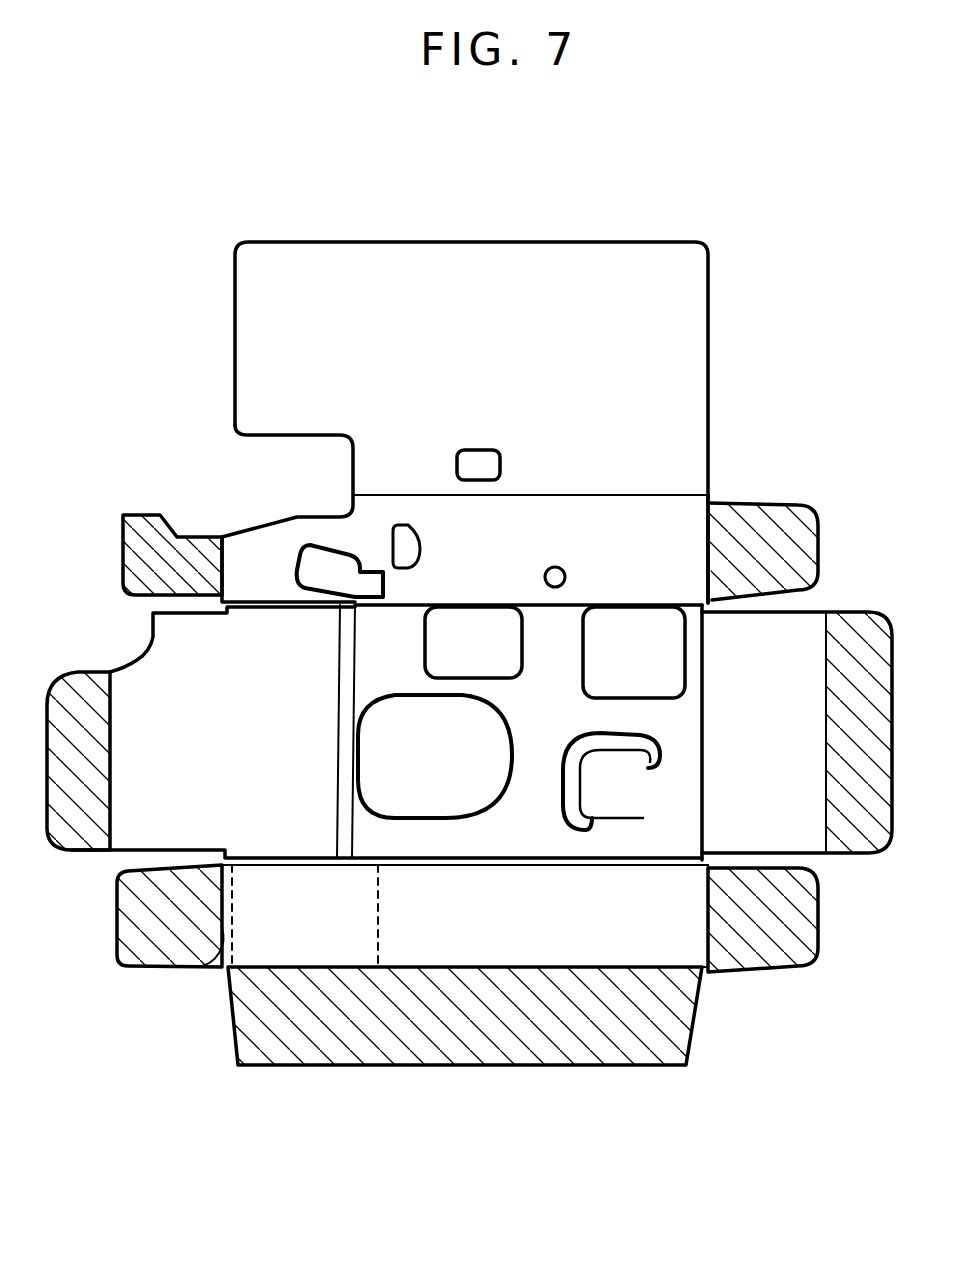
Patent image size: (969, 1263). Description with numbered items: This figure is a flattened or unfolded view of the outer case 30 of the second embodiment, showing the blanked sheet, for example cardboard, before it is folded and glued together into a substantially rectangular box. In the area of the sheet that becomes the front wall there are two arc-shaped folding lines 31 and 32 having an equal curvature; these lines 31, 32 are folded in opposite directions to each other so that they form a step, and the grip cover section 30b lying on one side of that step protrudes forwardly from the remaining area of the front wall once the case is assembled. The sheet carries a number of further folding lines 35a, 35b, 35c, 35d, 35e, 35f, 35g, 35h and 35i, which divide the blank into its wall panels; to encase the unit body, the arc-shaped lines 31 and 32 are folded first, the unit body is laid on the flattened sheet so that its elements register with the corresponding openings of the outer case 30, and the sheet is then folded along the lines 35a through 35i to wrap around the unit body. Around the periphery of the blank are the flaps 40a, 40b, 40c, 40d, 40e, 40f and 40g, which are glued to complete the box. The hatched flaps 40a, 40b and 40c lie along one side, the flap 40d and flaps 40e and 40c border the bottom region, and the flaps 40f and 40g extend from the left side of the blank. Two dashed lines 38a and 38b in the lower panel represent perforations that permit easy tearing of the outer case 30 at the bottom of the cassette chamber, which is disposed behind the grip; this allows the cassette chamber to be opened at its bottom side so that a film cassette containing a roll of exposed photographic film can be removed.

The outer case 30 is at (477, 222).
The grip cover section 30b is at (267, 722).
The arc-shaped folding line 31 is at (335, 810).
The arc-shaped folding line 32 is at (360, 823).
The folding line 35a is at (583, 495).
The folding line 35b is at (707, 543).
The folding line 35c is at (226, 595).
The folding line 35d is at (557, 610).
The folding line 35e is at (683, 730).
The folding line 35f is at (537, 867).
The folding line 35g is at (707, 910).
The folding line 35h is at (440, 967).
The folding line 35i is at (213, 943).
The dashed line 38a is at (235, 943).
The dashed line 38b is at (377, 903).
The flap 40a is at (780, 523).
The flap 40b is at (852, 627).
The flap 40c is at (770, 953).
The flap 40d is at (490, 1050).
The flap 40e is at (137, 950).
The flap 40f is at (83, 838).
The flap 40g is at (145, 530).